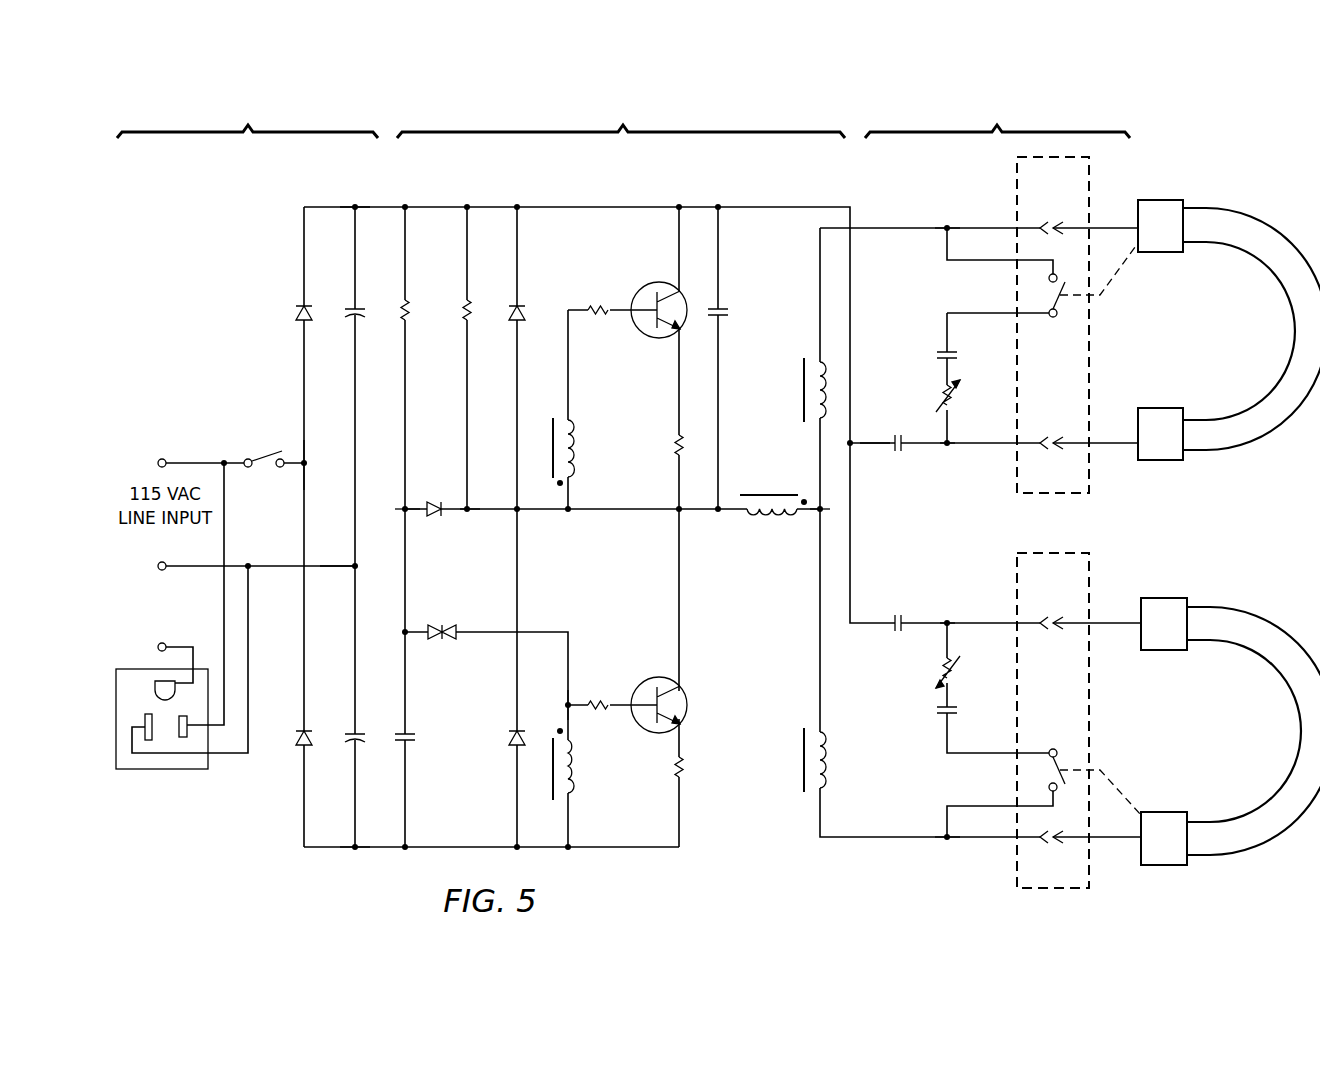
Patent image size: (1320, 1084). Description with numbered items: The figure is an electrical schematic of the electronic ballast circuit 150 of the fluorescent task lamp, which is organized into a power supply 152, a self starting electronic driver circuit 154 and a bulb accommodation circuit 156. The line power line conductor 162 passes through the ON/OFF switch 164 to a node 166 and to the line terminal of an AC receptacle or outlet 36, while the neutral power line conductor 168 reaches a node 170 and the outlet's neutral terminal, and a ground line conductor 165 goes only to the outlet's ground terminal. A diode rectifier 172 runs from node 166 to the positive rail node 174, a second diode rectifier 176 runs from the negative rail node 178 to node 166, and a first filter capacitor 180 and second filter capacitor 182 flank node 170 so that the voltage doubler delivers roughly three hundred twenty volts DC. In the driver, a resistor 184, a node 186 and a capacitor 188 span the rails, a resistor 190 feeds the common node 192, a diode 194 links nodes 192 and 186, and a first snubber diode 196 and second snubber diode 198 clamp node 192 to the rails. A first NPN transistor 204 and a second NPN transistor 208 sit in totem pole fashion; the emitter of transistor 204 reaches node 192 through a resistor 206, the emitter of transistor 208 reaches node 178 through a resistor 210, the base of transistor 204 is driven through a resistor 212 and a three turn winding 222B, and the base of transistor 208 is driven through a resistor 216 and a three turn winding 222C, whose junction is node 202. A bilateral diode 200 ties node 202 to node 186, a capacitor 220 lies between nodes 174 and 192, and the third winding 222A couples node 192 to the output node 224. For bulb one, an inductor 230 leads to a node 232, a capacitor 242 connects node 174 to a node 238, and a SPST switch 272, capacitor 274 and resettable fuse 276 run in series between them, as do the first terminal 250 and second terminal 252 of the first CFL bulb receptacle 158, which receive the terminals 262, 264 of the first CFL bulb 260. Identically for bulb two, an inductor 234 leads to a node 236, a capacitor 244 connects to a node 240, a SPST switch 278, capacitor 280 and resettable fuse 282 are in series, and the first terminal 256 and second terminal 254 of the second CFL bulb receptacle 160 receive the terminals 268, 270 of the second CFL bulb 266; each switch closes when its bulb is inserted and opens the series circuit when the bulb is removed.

The AC receptacle or outlet 36 is at (162, 770).
The electronic ballast circuit 150 is at (1239, 148).
The power supply 152 is at (247, 117).
The self starting electronic driver circuit 154 is at (621, 117).
The bulb accommodation circuit 156 is at (997, 117).
The first CFL bulb receptacle 158 is at (1062, 495).
The second CFL bulb receptacle 160 is at (1064, 890).
The line power line conductor 162 is at (166, 456).
The ON/OFF switch 164 is at (270, 454).
The ground line conductor 165 is at (165, 642).
The node 166 is at (308, 460).
The neutral power line conductor 168 is at (160, 572).
The node 170 is at (355, 568).
The diode rectifier 172 is at (300, 304).
The node (positive DC supply rail) 174 is at (353, 206).
The second diode rectifier 176 is at (302, 732).
The node (negative DC supply rail) 178 is at (353, 848).
The first filter capacitor 180 is at (350, 306).
The second filter capacitor 182 is at (352, 730).
The resistor 184 is at (412, 302).
The node 186 is at (404, 508).
The capacitor 188 is at (413, 732).
The resistor 190 is at (472, 302).
The node (common node) 192 is at (468, 514).
The diode 194 is at (440, 520).
The first snubber diode 196 is at (520, 302).
The second snubber diode 198 is at (506, 735).
The bilateral diode 200 is at (449, 638).
The node 202 is at (565, 702).
The first NPN transistor 204 is at (666, 284).
The resistor 206 is at (674, 446).
The second NPN transistor 208 is at (688, 704).
The resistor 210 is at (686, 771).
The resistor 212 is at (596, 302).
The resistor 216 is at (598, 698).
The capacitor 220 is at (720, 306).
The third winding 222A is at (766, 518).
The three turn winding 222B is at (576, 448).
The three turn winding 222C is at (575, 774).
The output node 224 is at (828, 514).
The inductor 230 is at (802, 380).
The node 232 is at (944, 226).
The inductor 234 is at (804, 778).
The node 236 is at (945, 840).
The node 238 is at (949, 448).
The node 240 is at (949, 619).
The capacitor 242 is at (907, 448).
The capacitor 244 is at (902, 611).
The first terminal of first receptacle 250 is at (1040, 224).
The second terminal of first receptacle 252 is at (1042, 437).
The second terminal of second receptacle 254 is at (1044, 632).
The first terminal of second receptacle 256 is at (1040, 844).
The first CFL bulb 260 is at (1242, 212).
The first terminal of first CFL bulb 262 is at (1170, 252).
The second terminal of first CFL bulb 264 is at (1160, 460).
The second CFL bulb 266 is at (1254, 852).
The first terminal of second CFL bulb 268 is at (1165, 650).
The second terminal of second CFL bulb 270 is at (1165, 865).
The SPST switch 272 is at (1058, 296).
The capacitor 274 is at (942, 352).
The resettable fuse 276 is at (942, 396).
The SPST switch 278 is at (1058, 770).
The capacitor 280 is at (938, 712).
The resettable fuse 282 is at (938, 666).